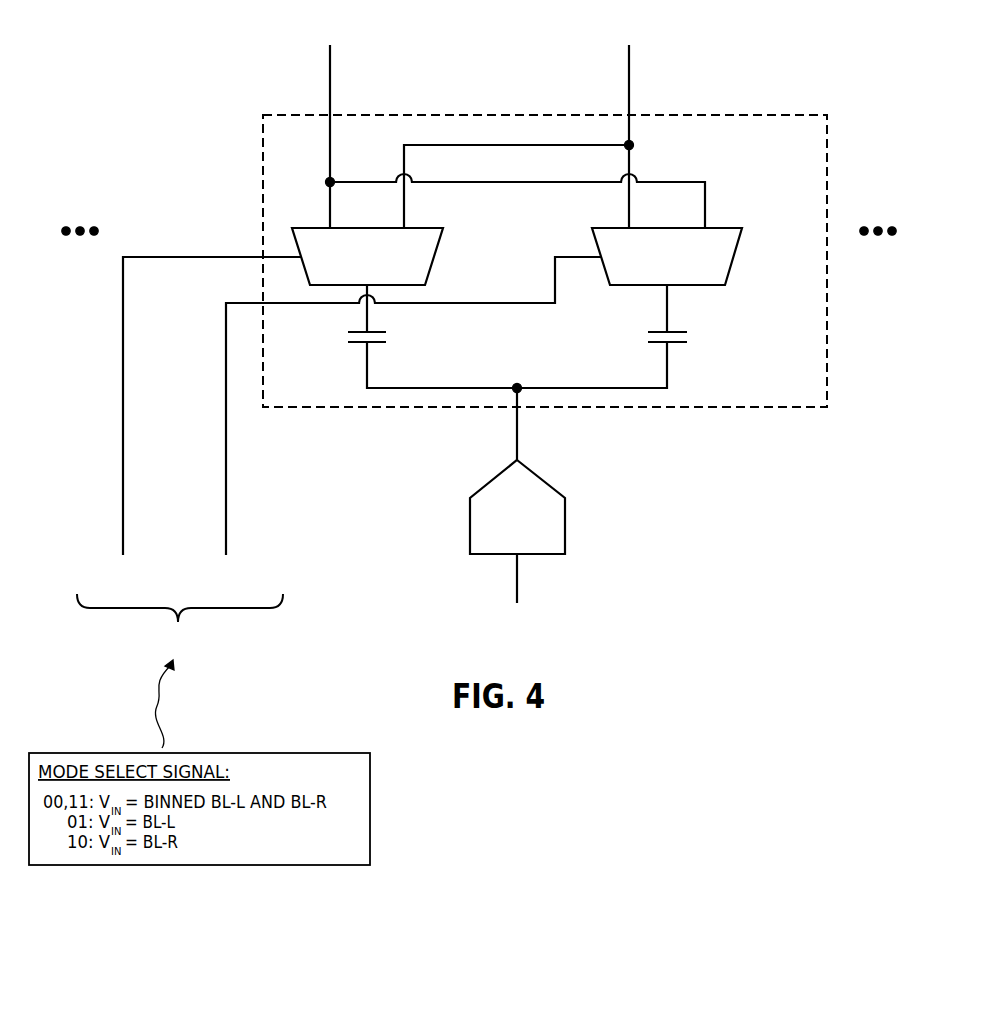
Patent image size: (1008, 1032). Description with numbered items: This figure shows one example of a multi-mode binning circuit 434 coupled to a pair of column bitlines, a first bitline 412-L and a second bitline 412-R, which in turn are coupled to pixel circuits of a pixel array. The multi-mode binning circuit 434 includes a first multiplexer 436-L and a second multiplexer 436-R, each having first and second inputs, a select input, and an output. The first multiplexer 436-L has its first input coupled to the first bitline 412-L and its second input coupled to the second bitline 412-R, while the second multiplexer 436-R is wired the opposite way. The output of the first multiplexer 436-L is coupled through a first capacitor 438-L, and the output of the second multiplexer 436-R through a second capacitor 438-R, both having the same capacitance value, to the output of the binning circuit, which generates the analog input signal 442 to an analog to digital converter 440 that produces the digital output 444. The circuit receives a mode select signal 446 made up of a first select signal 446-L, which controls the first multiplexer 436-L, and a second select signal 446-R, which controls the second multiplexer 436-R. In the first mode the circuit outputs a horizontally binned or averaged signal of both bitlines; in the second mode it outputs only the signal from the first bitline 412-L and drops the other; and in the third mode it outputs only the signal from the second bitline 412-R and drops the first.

The first bitline BL-L 412-L is at (326, 79).
The second bitline BL-R 412-R is at (625, 80).
The multi-mode binning circuit 434 is at (828, 135).
The first multiplexer MUX-L 436-L is at (445, 242).
The second multiplexer MUX-R 436-R is at (744, 242).
The first capacitor 438-L is at (346, 336).
The second capacitor 438-R is at (647, 336).
The analog to digital converter ADC 440 is at (567, 522).
The input VIN 442 is at (555, 440).
The digital output DOUT 444 is at (542, 617).
The mode select signal 446 is at (277, 645).
The first select signal SELECT-L 446-L is at (93, 555).
The second select signal SELECT-R 446-R is at (247, 555).